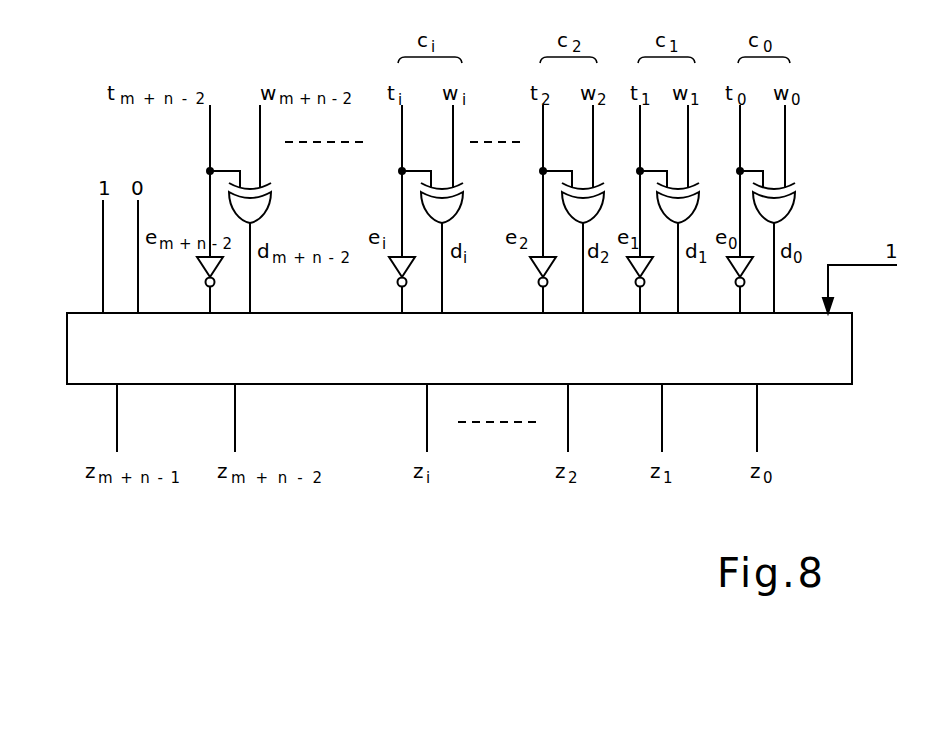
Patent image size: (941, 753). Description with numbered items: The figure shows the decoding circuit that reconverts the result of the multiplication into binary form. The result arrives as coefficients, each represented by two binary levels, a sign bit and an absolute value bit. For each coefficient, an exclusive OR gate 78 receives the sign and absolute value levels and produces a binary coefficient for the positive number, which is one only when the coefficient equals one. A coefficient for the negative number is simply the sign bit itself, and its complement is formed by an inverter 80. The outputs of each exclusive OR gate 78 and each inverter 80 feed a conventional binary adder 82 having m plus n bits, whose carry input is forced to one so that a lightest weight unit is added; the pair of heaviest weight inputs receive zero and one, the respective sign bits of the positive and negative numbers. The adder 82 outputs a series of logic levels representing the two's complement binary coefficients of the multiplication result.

The exclusive OR gate 78 is at (463, 201).
The inverter 80 is at (394, 266).
The binary adder 82 is at (852, 340).